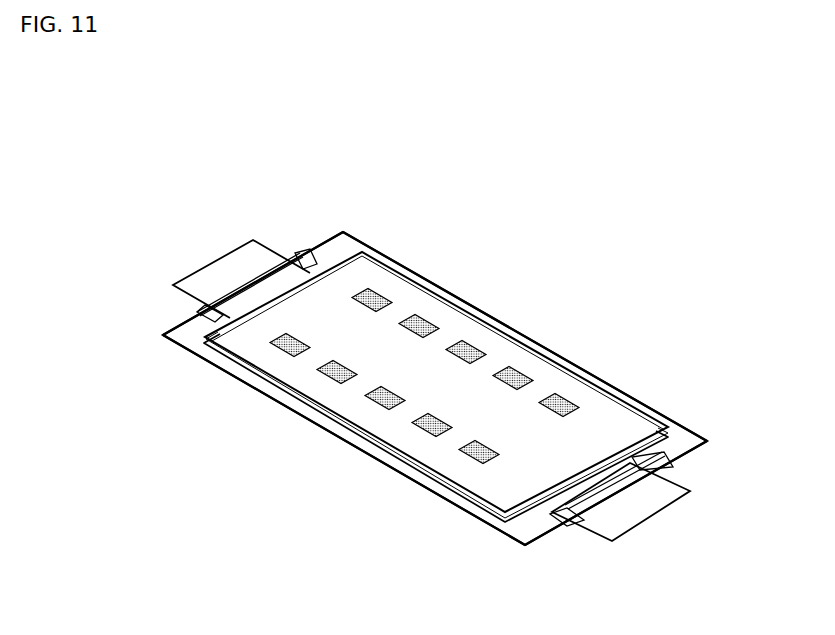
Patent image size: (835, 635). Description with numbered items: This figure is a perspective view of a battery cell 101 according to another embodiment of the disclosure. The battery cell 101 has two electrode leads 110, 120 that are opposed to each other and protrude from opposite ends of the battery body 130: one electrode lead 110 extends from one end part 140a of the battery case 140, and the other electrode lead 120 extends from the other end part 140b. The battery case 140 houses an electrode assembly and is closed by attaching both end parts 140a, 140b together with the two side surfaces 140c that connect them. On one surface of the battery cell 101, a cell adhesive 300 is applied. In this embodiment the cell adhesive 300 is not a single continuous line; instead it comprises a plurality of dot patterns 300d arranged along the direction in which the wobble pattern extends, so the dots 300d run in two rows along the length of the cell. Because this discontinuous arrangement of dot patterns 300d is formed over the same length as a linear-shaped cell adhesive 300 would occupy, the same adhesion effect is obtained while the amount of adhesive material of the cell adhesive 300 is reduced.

The battery cell 101 is at (441, 81).
The electrode lead 110 is at (230, 258).
The electrode lead 120 is at (657, 517).
The battery body 130 is at (525, 356).
The battery case 140 is at (690, 425).
The battery case end part 140a is at (340, 246).
The battery case end part 140b is at (530, 518).
The battery case side surface 140c is at (610, 384).
The cell adhesive 300 is at (424, 324).
The dot pattern 300d is at (377, 300).